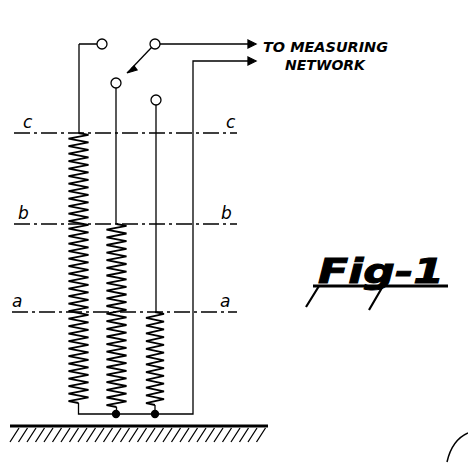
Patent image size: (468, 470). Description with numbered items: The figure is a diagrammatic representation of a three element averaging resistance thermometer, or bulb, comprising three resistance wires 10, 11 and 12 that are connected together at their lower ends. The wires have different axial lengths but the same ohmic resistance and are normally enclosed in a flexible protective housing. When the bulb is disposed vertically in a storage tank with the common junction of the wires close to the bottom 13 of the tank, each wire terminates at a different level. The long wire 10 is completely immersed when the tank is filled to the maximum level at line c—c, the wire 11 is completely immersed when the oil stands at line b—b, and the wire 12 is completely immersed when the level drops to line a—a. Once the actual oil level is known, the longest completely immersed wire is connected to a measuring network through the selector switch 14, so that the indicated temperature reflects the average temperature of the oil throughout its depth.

The resistance wire 10 is at (68, 180).
The resistance wire 11 is at (127, 269).
The resistance wire 12 is at (165, 353).
The bottom of the tank 13 is at (33, 425).
The selector switch 14 is at (50, 78).